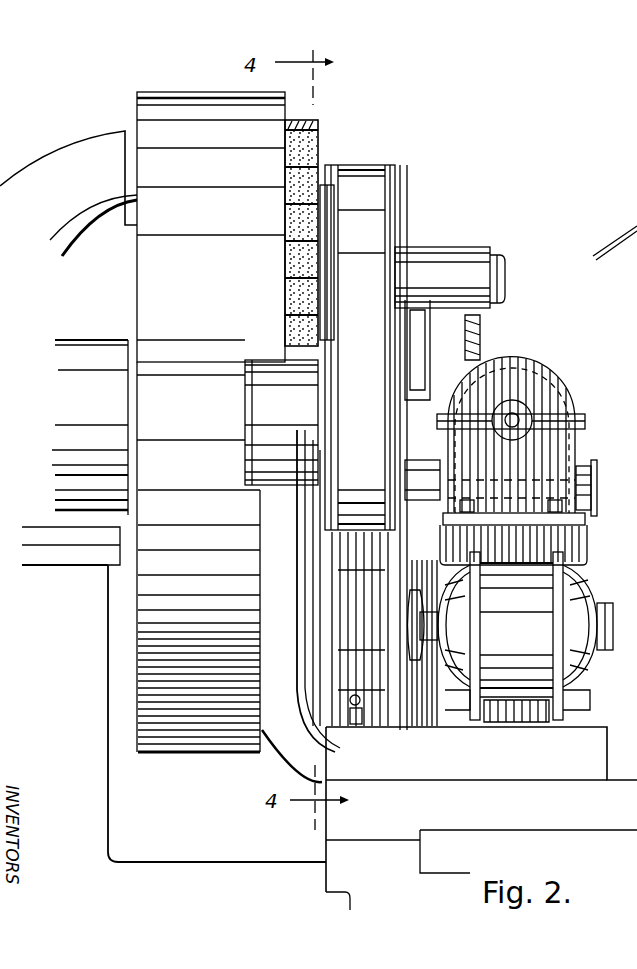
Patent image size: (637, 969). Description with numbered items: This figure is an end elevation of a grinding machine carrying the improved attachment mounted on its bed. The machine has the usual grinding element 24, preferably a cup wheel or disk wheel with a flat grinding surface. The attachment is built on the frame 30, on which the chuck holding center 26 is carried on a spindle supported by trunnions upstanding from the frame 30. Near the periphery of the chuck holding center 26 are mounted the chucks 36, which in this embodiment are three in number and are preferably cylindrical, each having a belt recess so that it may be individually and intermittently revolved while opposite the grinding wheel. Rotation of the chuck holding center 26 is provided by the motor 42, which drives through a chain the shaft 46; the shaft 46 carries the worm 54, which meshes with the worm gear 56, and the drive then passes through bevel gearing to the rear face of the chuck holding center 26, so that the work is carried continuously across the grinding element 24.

The grinding element 24 is at (318, 128).
The chuck 36 is at (395, 170).
The chuck holding center 26 is at (400, 250).
The worm 54 is at (560, 438).
The worm gear 56 is at (545, 478).
The shaft 46 is at (597, 498).
The motor 42 is at (590, 588).
The frame 30 is at (607, 745).